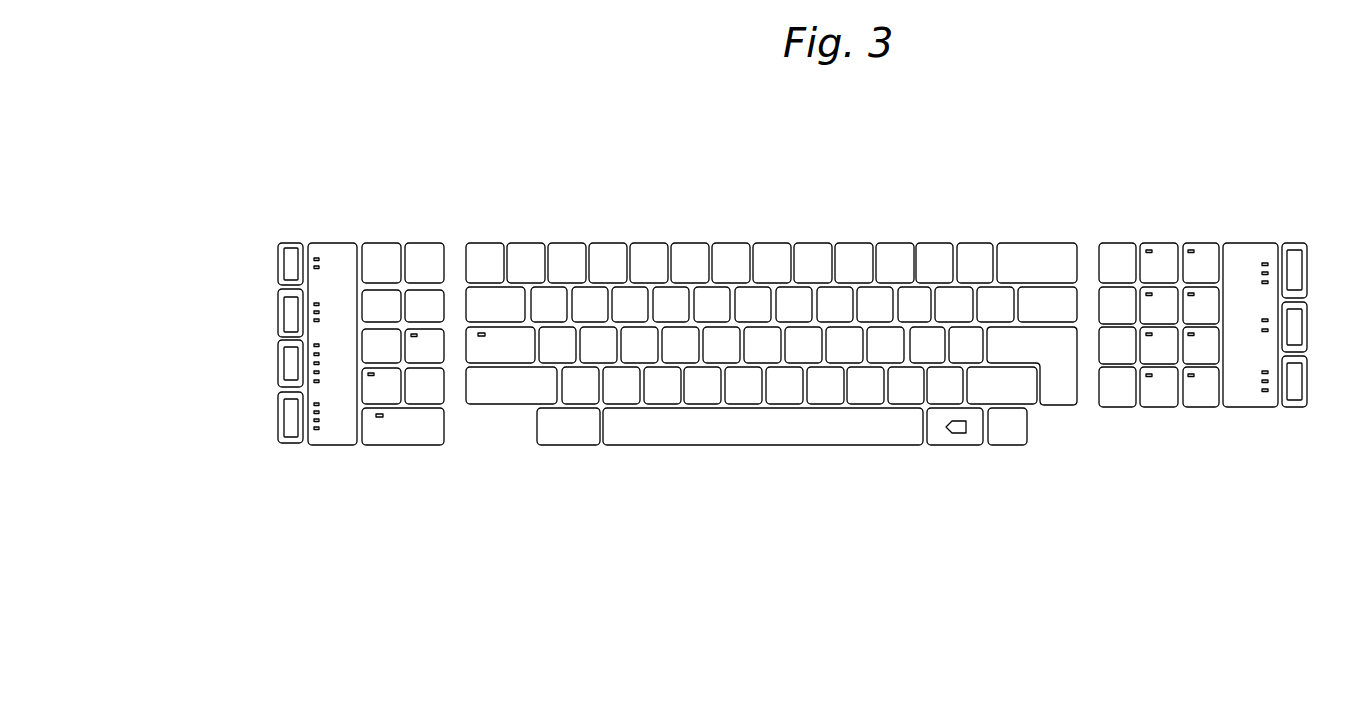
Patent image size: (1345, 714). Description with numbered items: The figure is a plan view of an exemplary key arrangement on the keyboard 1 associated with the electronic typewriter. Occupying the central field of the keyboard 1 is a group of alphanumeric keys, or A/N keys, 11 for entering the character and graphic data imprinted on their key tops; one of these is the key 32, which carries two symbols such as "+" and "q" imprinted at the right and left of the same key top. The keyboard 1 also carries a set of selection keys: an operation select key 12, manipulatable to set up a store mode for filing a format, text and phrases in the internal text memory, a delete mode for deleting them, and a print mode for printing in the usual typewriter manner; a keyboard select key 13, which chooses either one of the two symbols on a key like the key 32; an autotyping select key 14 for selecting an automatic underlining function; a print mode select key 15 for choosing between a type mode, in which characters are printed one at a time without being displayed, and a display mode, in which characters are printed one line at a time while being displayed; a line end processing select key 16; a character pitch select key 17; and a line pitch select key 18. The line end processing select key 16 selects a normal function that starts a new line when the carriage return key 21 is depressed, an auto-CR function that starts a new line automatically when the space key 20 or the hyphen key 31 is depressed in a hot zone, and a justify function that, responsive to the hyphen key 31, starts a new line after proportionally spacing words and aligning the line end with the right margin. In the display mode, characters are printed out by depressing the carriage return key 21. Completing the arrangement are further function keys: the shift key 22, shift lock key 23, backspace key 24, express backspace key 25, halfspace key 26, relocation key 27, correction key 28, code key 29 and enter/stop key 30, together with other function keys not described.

The keyboard 1 is at (646, 482).
The alphanumeric keys 11 is at (771, 229).
The operation select key 12 is at (1295, 387).
The keyboard select key 13 is at (1295, 330).
The autotyping select key 14 is at (1295, 273).
The print mode select key 15 is at (290, 263).
The line end processing select key 16 is at (290, 314).
The character pitch select key 17 is at (290, 362).
The line pitch select key 18 is at (290, 416).
The space key 20 is at (770, 440).
The carriage return key 21 is at (1062, 387).
The shift key 22 is at (520, 397).
The shift lock key 23 is at (483, 357).
The backspace key 24 is at (1013, 248).
The express backspace key 25 is at (1073, 250).
The halfspace key 26 is at (1108, 247).
The relocation key 27 is at (1099, 318).
The correction key 28 is at (940, 437).
The code key 29 is at (383, 437).
The enter/stop key 30 is at (1015, 437).
The hyphen key 31 is at (937, 243).
The symbol key 32 is at (972, 243).